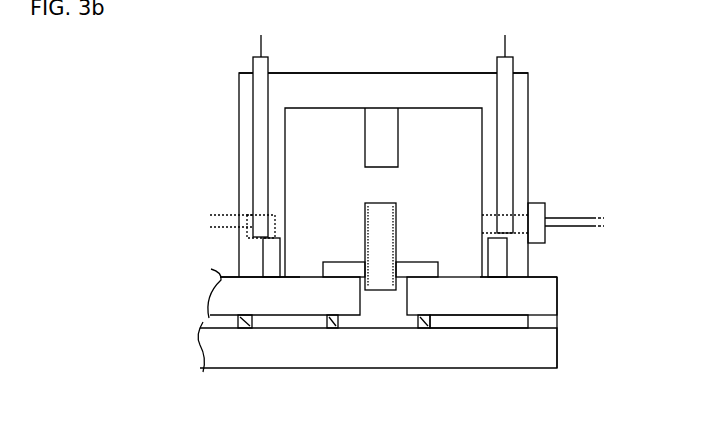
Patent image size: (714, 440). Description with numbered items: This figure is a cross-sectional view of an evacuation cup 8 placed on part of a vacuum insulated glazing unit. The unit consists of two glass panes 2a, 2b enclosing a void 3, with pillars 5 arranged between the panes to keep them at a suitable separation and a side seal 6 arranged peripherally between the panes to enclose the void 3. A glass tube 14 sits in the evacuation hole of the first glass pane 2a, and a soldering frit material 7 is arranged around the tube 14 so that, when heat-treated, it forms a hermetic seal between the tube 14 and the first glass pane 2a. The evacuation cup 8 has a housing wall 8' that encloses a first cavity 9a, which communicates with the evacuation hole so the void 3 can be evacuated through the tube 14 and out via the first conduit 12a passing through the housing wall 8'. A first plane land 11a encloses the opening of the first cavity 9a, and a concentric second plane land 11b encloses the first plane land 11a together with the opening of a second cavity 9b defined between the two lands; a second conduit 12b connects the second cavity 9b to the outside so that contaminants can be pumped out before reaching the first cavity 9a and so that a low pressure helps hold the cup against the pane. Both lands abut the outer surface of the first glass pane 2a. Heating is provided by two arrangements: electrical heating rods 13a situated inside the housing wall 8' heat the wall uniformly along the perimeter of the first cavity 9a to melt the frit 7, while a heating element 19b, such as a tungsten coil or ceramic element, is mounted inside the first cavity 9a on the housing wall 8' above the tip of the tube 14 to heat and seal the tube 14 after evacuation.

The evacuation cup 8 is at (383, 138).
The housing wall 8' is at (383, 62).
The heating rods 13a is at (262, 113).
The first cavity 9a is at (337, 153).
The heating element 19b is at (378, 157).
The glass tube 14 is at (393, 220).
The soldering frit material 7 is at (362, 270).
The first plane land 11a is at (283, 277).
The second cavity 9b is at (497, 268).
The second conduit 12b is at (247, 222).
The first conduit 12a is at (490, 223).
The first glass pane 2a is at (487, 295).
The second plane land 11b is at (243, 275).
The pillars 5 is at (415, 325).
The void 3 is at (503, 323).
The second glass pane 2b is at (487, 353).
The side seal 6 is at (572, 333).